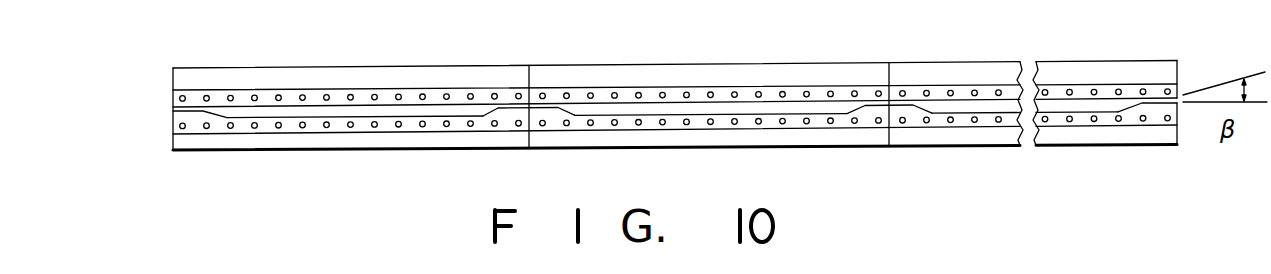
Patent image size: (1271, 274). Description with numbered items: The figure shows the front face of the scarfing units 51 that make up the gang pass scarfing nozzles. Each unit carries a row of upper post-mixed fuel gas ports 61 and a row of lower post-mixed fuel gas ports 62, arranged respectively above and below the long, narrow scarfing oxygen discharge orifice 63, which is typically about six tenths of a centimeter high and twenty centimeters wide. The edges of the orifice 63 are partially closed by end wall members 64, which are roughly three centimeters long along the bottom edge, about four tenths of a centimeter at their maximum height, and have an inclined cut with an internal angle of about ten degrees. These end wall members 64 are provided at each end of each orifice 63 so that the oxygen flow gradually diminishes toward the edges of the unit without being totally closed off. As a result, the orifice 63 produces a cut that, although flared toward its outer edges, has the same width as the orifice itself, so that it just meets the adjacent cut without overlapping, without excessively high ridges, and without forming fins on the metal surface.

The panel section 51 is at (482, 66).
The upper post-mixed fuel gas ports 61 is at (206, 96).
The lower post-mixed fuel gas ports 62 is at (231, 128).
The scarfing oxygen discharge orifice 63 is at (403, 112).
The end wall members 64 is at (183, 114).